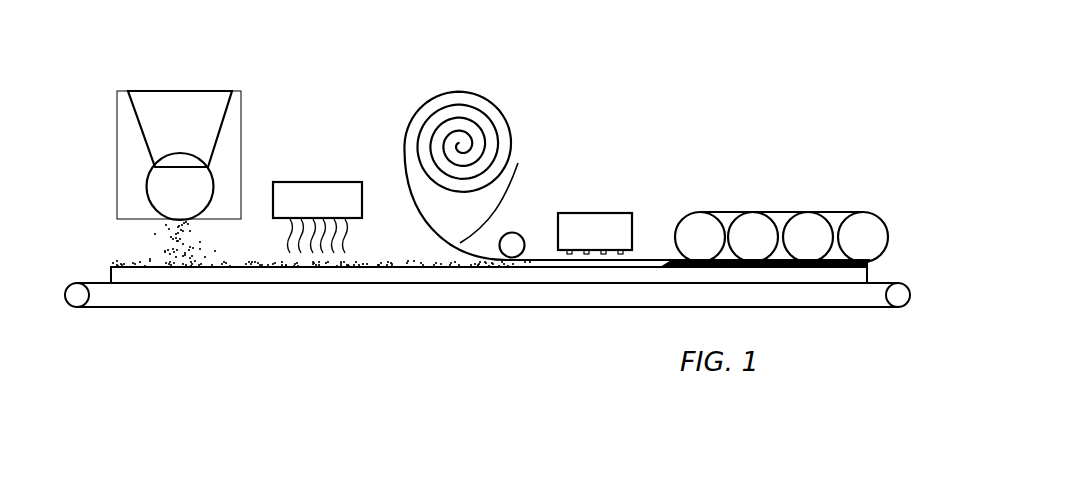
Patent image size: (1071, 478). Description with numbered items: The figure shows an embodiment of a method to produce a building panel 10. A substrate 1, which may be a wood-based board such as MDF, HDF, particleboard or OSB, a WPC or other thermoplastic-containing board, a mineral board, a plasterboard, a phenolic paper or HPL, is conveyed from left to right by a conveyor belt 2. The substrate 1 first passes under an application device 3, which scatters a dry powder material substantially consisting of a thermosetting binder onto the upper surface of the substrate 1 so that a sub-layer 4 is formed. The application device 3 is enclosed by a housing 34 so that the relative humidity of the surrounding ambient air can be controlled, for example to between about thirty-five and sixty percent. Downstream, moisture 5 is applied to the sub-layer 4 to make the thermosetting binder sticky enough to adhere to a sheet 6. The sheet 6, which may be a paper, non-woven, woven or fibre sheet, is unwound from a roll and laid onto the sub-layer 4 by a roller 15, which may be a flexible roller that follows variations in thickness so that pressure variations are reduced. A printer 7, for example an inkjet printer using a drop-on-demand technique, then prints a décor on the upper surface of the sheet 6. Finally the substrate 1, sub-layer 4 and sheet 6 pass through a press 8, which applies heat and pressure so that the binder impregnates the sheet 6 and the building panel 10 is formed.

The substrate 1 is at (180, 278).
The conveyor belt 2 is at (347, 306).
The application device 3 is at (137, 80).
The sub-layer 4 is at (262, 262).
The moisture 5 is at (318, 167).
The sheet 6 is at (518, 163).
The printer 7 is at (608, 203).
The press 8 is at (770, 200).
The building panel 10 is at (832, 277).
The roller 15 is at (523, 232).
The housing 34 is at (117, 192).